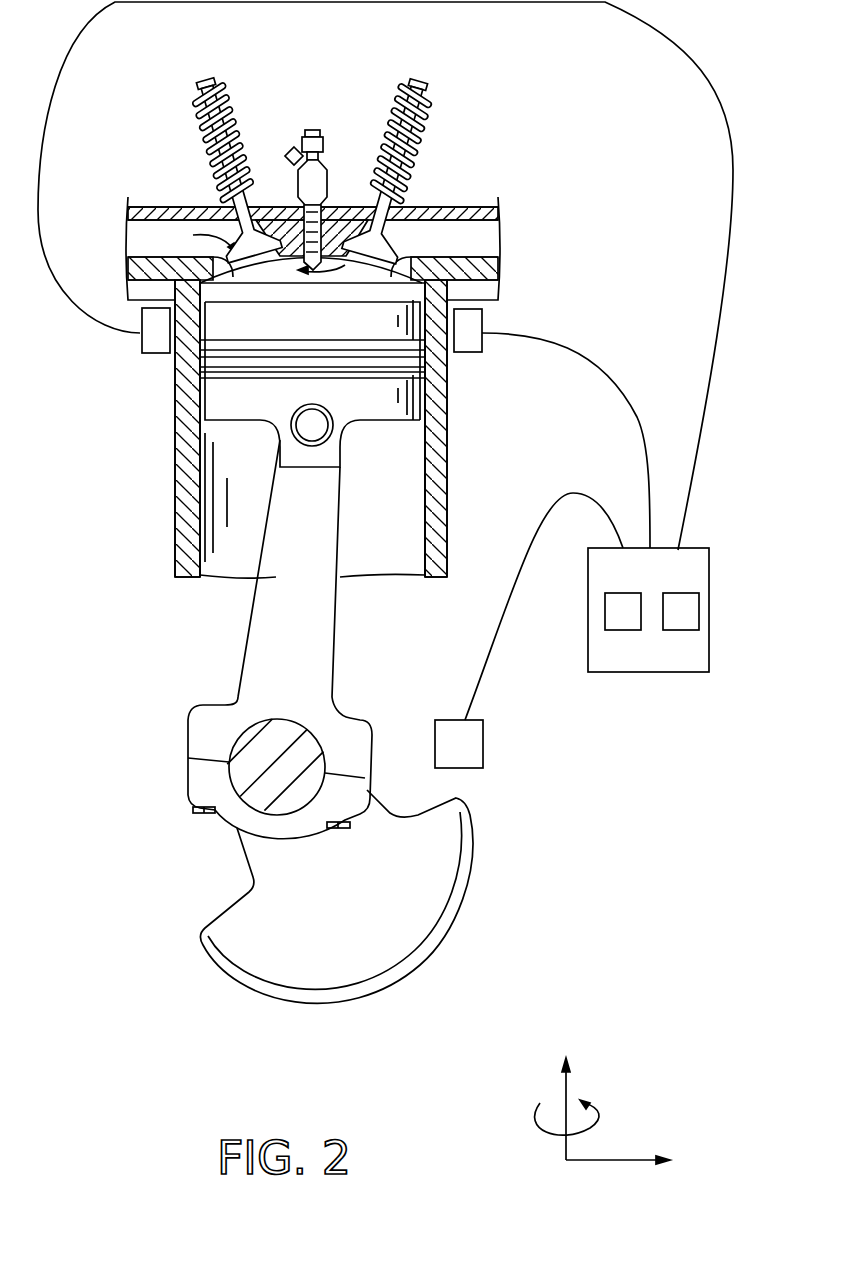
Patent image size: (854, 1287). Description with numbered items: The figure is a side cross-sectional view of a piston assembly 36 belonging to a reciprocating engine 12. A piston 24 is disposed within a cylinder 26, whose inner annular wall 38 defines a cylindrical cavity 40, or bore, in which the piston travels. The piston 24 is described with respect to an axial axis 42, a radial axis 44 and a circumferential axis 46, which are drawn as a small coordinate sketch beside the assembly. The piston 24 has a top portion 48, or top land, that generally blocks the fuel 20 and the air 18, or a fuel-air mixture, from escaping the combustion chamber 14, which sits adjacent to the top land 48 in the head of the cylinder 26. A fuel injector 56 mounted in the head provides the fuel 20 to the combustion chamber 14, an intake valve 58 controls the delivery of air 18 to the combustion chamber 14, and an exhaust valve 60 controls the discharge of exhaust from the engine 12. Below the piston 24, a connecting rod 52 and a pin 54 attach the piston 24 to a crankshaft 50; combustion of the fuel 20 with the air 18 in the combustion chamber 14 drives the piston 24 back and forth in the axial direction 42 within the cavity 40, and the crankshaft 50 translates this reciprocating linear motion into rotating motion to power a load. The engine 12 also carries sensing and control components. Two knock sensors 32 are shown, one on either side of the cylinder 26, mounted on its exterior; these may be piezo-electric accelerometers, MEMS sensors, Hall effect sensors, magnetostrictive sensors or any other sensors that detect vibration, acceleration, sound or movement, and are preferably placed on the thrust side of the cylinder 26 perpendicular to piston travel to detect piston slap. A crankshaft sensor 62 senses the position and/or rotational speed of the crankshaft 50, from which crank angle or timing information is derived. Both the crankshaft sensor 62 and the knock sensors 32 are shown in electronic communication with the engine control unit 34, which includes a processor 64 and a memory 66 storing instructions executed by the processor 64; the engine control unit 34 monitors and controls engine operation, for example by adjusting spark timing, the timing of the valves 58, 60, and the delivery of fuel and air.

The reciprocating engine 12 is at (545, 102).
The combustion chamber 14 is at (395, 268).
The air 18 is at (216, 216).
The fuel 20 is at (313, 120).
The piston 24 is at (388, 417).
The cylinder 26 is at (178, 458).
The knock sensor 32 is at (140, 342).
The engine control unit 34 is at (709, 548).
The piston assembly 36 is at (360, 550).
The inner annular wall 38 is at (197, 497).
The cylindrical cavity 40 is at (224, 560).
The axial axis 42 is at (565, 1093).
The radial axis 44 is at (608, 1160).
The circumferential axis 46 is at (600, 1128).
The top portion 48 is at (372, 330).
The crankshaft 50 is at (247, 922).
The connecting rod 52 is at (318, 684).
The pin 54 is at (321, 429).
The fuel injector 56 is at (313, 146).
The intake valve 58 is at (207, 85).
The exhaust valve 60 is at (418, 86).
The crankshaft sensor 62 is at (485, 748).
The processor 64 is at (623, 630).
The memory 66 is at (681, 630).